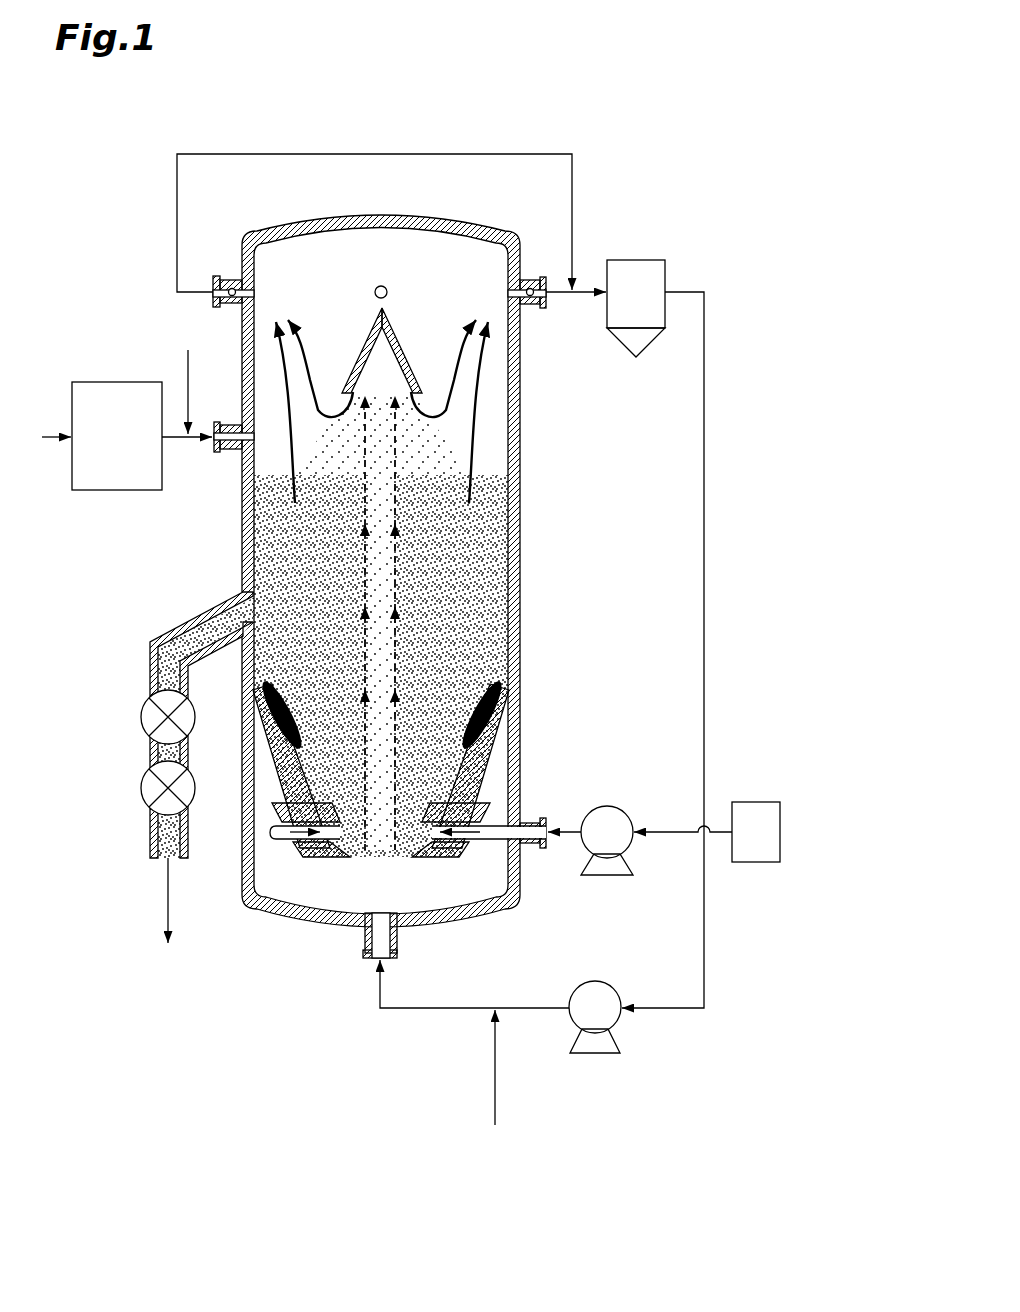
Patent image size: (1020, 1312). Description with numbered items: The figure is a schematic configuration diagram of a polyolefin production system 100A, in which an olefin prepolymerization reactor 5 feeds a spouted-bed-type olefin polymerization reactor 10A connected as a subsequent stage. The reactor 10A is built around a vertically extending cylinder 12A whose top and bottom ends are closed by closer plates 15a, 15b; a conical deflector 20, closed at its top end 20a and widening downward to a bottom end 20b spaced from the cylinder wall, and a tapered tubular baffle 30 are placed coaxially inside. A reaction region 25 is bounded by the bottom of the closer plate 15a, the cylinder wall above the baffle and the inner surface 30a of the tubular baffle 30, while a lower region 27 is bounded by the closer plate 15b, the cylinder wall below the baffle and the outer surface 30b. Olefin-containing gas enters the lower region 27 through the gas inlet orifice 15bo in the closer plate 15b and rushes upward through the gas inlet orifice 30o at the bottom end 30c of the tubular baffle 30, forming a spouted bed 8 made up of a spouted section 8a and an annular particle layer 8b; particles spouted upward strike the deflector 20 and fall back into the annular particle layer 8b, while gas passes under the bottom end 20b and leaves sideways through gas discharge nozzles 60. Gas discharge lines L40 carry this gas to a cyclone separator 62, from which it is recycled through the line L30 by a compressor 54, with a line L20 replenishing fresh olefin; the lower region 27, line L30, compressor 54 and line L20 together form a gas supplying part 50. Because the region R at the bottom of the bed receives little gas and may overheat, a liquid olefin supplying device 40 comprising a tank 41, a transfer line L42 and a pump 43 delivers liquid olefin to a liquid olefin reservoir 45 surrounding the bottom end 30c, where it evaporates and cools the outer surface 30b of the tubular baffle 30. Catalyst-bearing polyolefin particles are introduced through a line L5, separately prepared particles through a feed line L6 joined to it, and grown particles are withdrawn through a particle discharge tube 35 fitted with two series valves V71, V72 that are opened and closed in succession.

The polyolefin production system 100A is at (743, 50).
The olefin polymerization reactor 10A is at (376, 131).
The closer plate 15a is at (466, 218).
The closer plate 15b is at (292, 926).
The gas inlet orifice 15bo is at (397, 940).
The cylinder 12A is at (520, 505).
The reaction region 25 is at (493, 415).
The deflector 20 is at (395, 333).
The top end 20a is at (378, 305).
The bottom end 20b is at (420, 400).
The gas discharge nozzles 60 is at (381, 285).
The cyclone separator 62 is at (645, 260).
The gas discharge lines L40 is at (507, 153).
The line L30 is at (687, 290).
The line L20 is at (495, 1082).
The transfer line L42 is at (668, 831).
The olefin prepolymerization reactor 5 is at (108, 382).
The line L5 is at (175, 440).
The feed line L6 is at (186, 362).
The particle discharge tube 35 is at (180, 628).
The valve V71 is at (141, 717).
The valve V72 is at (141, 788).
The tubular baffle 30 is at (393, 780).
The inner surface 30a is at (478, 722).
The outer surface 30b is at (468, 775).
The bottom end 30c is at (420, 858).
The gas inlet orifice 30o is at (378, 858).
The lower region 27 is at (330, 922).
The liquid olefin reservoir 45 is at (446, 870).
The liquid olefin supplying device 40 is at (666, 801).
The tank 41 is at (752, 862).
The pump 43 is at (615, 806).
The compressor 54 is at (600, 981).
The gas supplying part 50 is at (357, 1051).
The spouted bed 8 is at (435, 626).
The spouted section 8a is at (385, 660).
The annular particle layer 8b is at (470, 622).
The region R is at (280, 720).